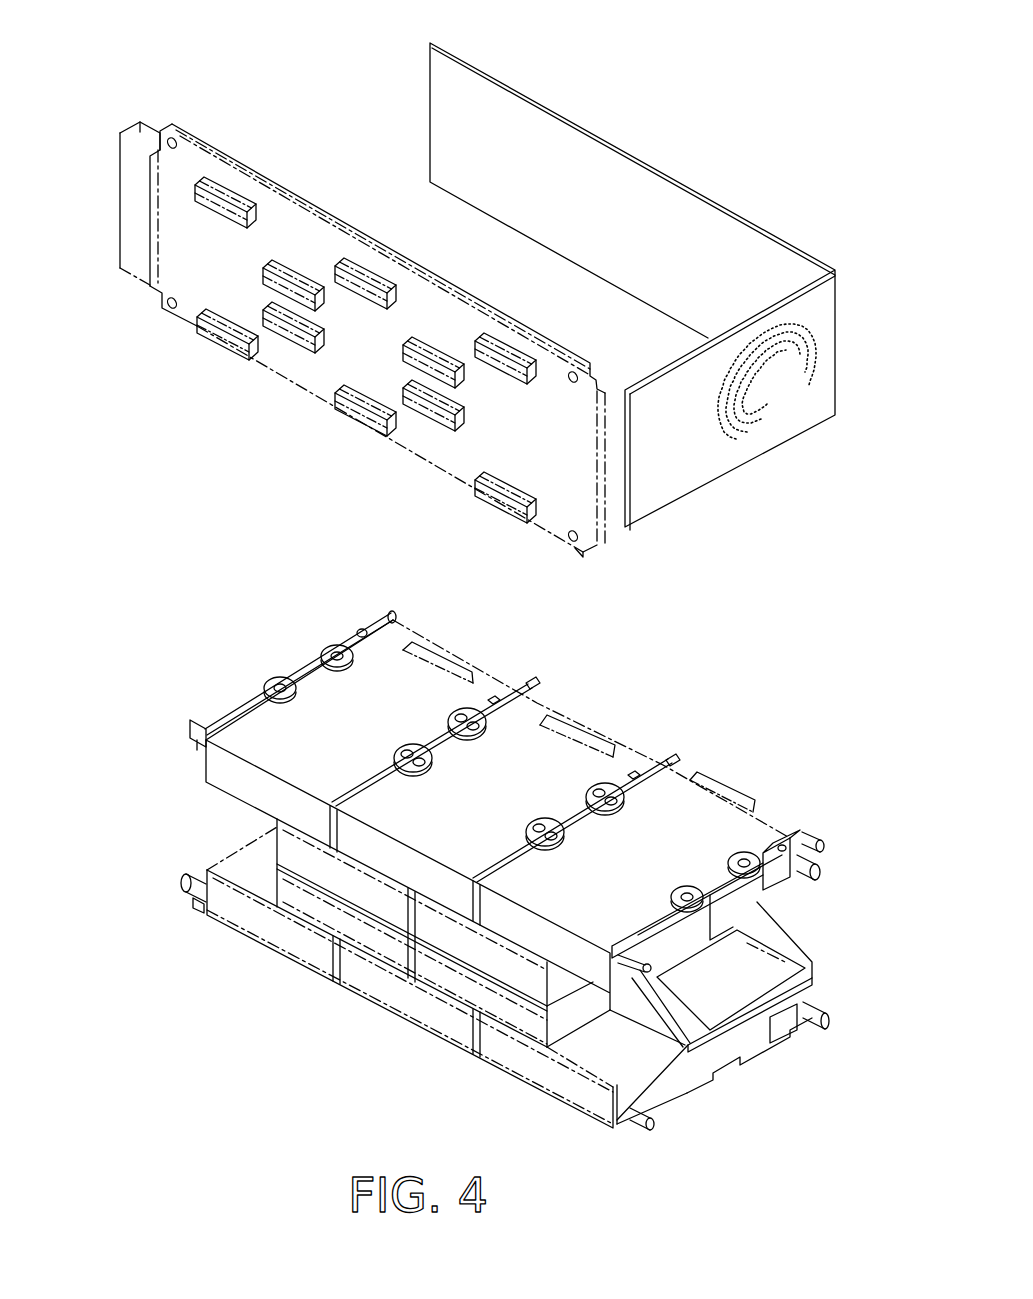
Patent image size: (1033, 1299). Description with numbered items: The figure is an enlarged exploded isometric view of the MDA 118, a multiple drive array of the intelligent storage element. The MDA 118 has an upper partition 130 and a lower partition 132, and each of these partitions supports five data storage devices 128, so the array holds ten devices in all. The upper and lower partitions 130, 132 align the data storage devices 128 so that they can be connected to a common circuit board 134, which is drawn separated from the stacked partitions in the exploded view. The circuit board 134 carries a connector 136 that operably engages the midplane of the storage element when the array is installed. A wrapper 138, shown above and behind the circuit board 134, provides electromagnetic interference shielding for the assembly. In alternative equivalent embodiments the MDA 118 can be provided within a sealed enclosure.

The MDA 118 is at (706, 40).
The data storage devices 128 is at (311, 692).
The upper partition 130 is at (787, 883).
The lower partition 132 is at (812, 972).
The circuit board 134 is at (180, 137).
The connector 136 is at (137, 130).
The wrapper 138 is at (490, 72).